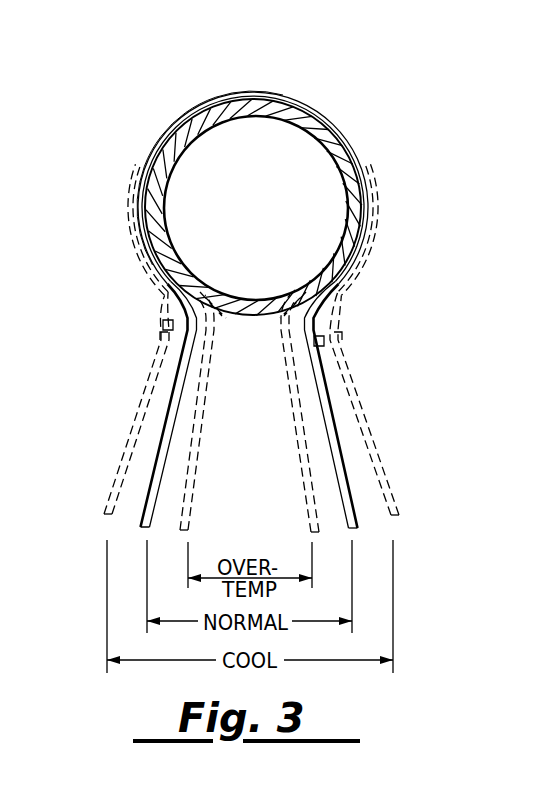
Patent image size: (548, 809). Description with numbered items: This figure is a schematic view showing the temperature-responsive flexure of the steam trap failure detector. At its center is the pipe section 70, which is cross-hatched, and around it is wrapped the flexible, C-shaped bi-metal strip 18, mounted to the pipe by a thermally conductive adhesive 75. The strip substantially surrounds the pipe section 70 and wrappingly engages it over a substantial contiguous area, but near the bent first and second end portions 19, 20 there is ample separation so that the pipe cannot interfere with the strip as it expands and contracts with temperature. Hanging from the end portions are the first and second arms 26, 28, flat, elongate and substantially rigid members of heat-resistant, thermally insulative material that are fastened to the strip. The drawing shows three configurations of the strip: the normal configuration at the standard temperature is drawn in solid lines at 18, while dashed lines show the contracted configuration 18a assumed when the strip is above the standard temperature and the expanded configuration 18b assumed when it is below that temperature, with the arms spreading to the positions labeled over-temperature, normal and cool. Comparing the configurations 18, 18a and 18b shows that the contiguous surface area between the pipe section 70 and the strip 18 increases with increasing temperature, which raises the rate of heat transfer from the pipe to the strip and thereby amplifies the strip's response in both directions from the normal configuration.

The bi-metal strip 18 is at (353, 168).
The bi-metal strip configuration above standard temperature 18a is at (345, 297).
The bi-metal strip configuration below standard temperature 18b is at (363, 255).
The first end portion 19 is at (190, 332).
The second end portion 20 is at (313, 335).
The first arm 26 is at (160, 462).
The second arm 28 is at (338, 452).
The pipe section 70 is at (325, 128).
The thermally conductive adhesive 75 is at (262, 96).